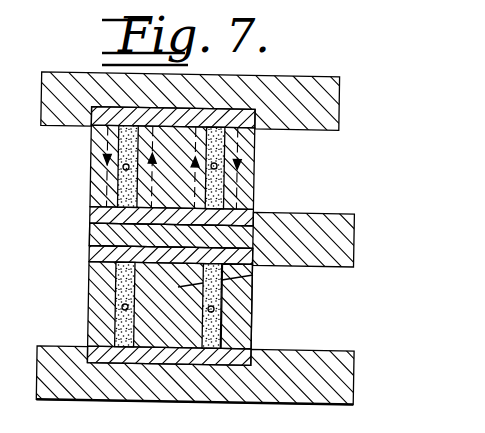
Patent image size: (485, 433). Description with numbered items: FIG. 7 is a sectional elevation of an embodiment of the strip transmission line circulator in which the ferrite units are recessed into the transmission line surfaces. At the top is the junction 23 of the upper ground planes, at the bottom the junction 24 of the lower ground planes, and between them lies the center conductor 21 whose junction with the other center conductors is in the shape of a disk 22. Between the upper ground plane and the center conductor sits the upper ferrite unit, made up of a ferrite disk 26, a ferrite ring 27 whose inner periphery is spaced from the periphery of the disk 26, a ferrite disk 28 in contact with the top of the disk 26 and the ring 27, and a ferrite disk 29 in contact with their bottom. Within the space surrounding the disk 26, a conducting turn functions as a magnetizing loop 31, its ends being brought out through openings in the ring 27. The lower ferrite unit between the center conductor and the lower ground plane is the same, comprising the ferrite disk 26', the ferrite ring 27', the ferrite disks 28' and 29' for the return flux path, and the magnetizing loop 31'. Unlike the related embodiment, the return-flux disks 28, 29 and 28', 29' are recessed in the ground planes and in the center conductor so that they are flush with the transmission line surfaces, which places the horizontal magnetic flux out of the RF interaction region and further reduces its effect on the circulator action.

The center conductor 21 is at (314, 214).
The disk 22 is at (100, 231).
The junction of the upper ground planes 23 is at (275, 78).
The junction of the lower ground planes 24 is at (319, 371).
The ferrite disk 26 is at (172, 144).
The ferrite disk 26' is at (204, 305).
The ferrite ring 27 is at (271, 169).
The ferrite ring 27' is at (268, 306).
The ferrite disk 28 is at (142, 133).
The ferrite disk 28' is at (140, 335).
The ferrite disk 29 is at (145, 208).
The ferrite disk 29' is at (145, 265).
The magnetizing loop 31 is at (167, 167).
The magnetizing loop 31' is at (206, 305).